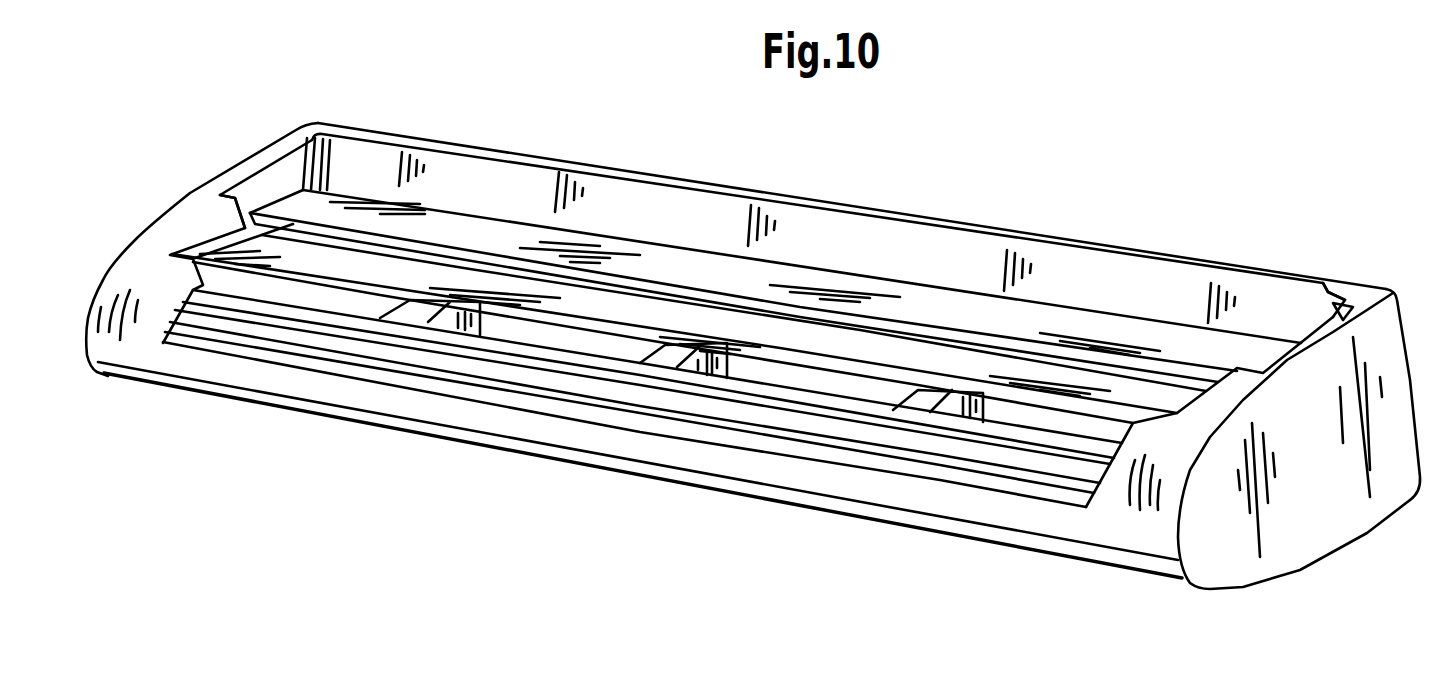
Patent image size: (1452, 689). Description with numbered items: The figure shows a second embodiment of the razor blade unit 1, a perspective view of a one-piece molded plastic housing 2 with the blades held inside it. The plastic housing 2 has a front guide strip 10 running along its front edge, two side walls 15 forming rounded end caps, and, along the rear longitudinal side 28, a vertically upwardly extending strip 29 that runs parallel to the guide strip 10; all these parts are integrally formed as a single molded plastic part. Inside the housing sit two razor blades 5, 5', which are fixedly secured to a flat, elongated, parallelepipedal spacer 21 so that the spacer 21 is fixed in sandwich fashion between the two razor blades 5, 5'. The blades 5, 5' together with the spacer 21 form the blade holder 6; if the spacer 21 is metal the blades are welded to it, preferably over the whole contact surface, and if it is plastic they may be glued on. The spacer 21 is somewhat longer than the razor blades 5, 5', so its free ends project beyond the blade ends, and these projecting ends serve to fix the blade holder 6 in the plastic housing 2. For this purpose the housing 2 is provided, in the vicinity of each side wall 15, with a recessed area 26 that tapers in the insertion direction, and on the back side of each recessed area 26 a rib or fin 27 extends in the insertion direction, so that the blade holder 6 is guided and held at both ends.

The razor blade unit 1 is at (1154, 247).
The plastic housing 2 is at (1127, 530).
The razor blade 5 is at (775, 272).
The razor blade 5' is at (674, 261).
The blade holder 6 is at (403, 256).
The front guide strip 10 is at (995, 470).
The side walls 15 is at (225, 182).
The spacer 21 is at (665, 292).
The recessed area 26 is at (284, 172).
The rib or fin 27 is at (322, 140).
The rear longitudinal side 28 is at (827, 270).
The vertically upwardly extending strip 29 is at (932, 248).